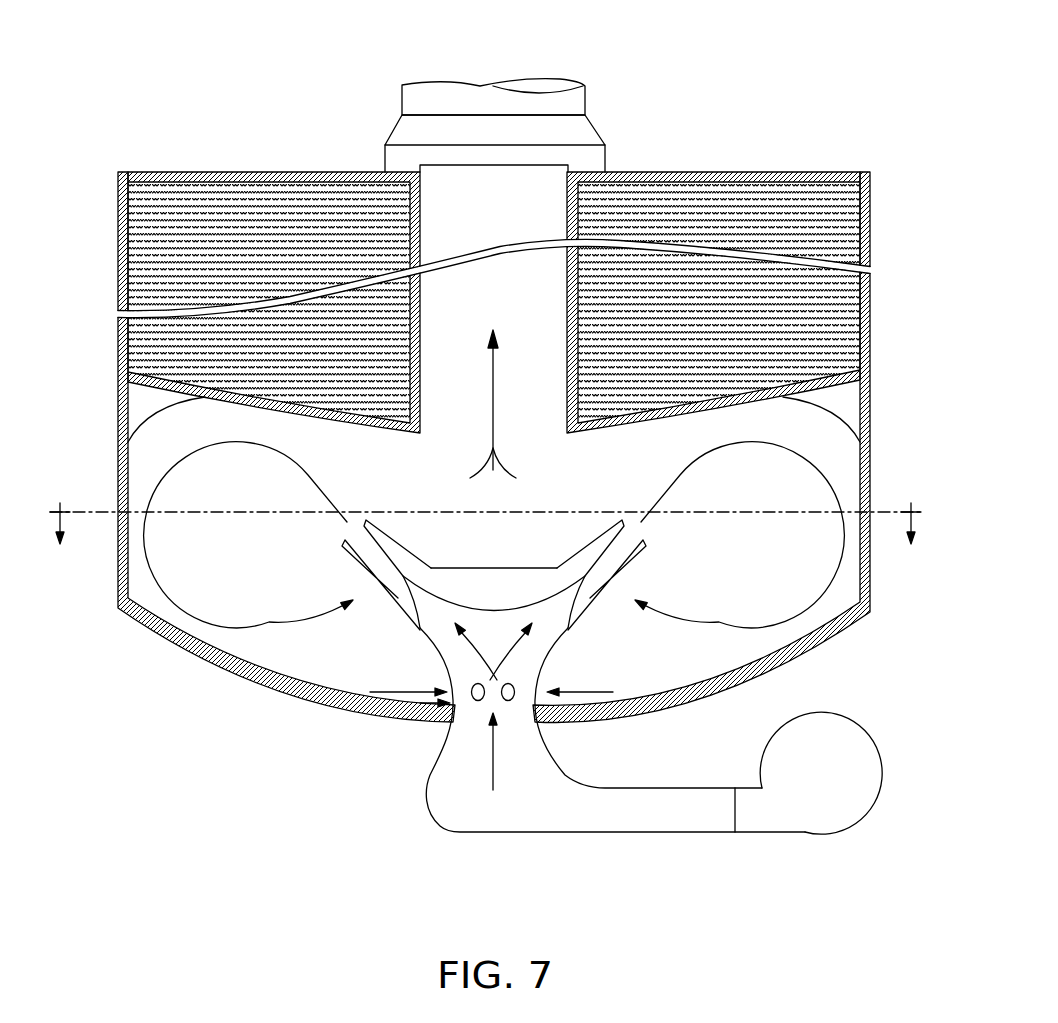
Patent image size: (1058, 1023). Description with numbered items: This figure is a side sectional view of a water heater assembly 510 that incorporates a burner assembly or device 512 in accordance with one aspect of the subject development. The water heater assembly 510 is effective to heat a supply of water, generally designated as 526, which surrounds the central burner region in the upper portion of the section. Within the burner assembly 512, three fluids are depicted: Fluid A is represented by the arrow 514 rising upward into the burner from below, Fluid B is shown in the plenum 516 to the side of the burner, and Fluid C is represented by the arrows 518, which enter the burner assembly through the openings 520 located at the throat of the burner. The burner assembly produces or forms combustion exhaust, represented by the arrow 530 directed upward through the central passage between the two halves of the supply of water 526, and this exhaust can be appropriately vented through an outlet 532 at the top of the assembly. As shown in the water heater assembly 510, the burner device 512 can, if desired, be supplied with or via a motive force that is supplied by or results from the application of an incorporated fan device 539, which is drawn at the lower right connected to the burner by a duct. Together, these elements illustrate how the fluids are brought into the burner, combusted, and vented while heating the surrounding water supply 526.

The water heater assembly 510 is at (812, 105).
The burner assembly or device 512 is at (437, 710).
The arrow representing Fluid A 514 is at (493, 764).
The plenum 516 is at (588, 600).
The arrows representing Fluid C 518 is at (397, 688).
The openings 520 is at (517, 697).
The supply of water 526 is at (731, 341).
The arrow representing combustion exhaust 530 is at (493, 428).
The outlet 532 is at (588, 90).
The fan device 539 is at (812, 792).